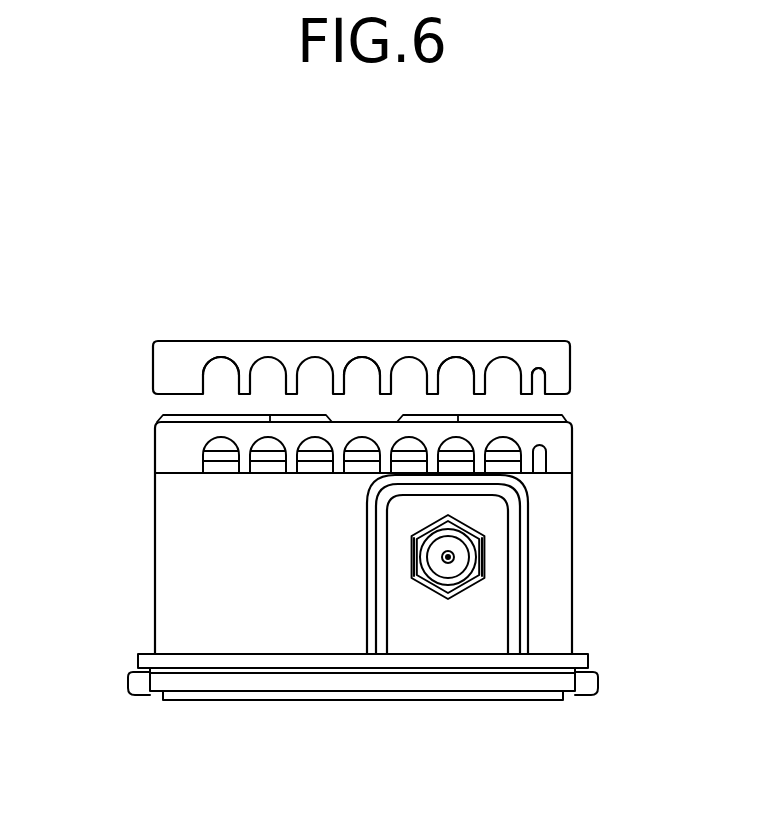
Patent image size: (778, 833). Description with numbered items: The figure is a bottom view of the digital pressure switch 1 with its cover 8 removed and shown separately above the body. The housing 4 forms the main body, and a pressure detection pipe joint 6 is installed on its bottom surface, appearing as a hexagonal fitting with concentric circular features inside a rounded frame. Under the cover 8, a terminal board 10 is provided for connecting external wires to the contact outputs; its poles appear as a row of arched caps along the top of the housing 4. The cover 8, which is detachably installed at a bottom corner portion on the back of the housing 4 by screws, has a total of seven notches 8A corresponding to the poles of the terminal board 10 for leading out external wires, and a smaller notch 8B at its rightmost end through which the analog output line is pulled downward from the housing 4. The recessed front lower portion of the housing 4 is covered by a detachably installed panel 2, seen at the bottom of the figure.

The digital pressure switch 1 is at (374, 596).
The panel 2 is at (257, 683).
The housing 4 is at (153, 584).
The pressure detection pipe joint 6 is at (485, 567).
The cover 8 is at (186, 352).
The notches 8A is at (224, 357).
The notch 8B is at (545, 378).
The terminal board 10 is at (204, 452).